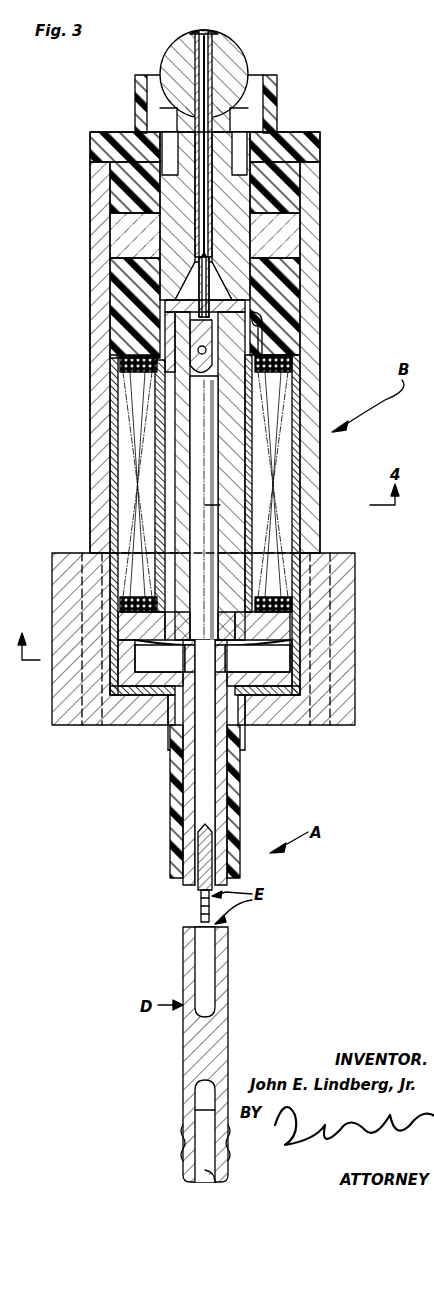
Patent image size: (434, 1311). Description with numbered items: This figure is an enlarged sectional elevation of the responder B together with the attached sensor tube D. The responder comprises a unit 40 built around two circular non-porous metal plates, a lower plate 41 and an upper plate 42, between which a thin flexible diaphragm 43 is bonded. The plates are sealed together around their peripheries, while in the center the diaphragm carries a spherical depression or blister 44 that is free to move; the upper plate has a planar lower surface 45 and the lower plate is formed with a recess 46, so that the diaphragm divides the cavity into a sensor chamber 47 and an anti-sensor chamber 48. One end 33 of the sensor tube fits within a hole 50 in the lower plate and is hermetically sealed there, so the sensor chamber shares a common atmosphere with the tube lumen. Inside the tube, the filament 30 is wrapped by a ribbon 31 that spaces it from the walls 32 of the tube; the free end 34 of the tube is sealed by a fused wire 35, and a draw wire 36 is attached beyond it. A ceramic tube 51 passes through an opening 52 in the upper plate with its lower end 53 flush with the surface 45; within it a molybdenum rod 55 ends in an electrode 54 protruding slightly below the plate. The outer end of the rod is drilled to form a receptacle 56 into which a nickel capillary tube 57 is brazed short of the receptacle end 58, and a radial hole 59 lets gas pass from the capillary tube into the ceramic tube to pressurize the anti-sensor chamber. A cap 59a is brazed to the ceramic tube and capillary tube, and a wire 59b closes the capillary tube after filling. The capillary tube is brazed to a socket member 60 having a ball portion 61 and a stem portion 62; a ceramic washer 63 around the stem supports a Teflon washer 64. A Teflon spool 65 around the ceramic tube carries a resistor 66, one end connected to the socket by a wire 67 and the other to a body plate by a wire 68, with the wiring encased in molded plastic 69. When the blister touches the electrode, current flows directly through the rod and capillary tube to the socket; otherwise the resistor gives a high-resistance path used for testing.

The filament 30 is at (200, 912).
The ribbon 31 is at (205, 858).
The walls of the tube 32 is at (195, 804).
The end of the tube 33 is at (180, 722).
The free end of the tube 34 is at (222, 1162).
The wire 35 is at (212, 1040).
The draw wire 36 is at (200, 1163).
The unit 40 is at (134, 703).
The lower plate 41 is at (130, 700).
The upper plate 42 is at (292, 614).
The diaphragm 43 is at (290, 628).
The blister 44 is at (160, 658).
The planar lower surface 45 is at (130, 672).
The recess 46 is at (250, 660).
The sensor chamber 47 is at (258, 700).
The anti-sensor chamber 48 is at (290, 641).
The hole 50 is at (216, 688).
The ceramic tube 51 is at (232, 480).
The opening 52 is at (118, 612).
The lower end of the tube 53 is at (195, 668).
The electrode 54 is at (226, 676).
The rod 55 is at (213, 463).
The receptacle 56 is at (122, 358).
The capillary tube 57 is at (170, 332).
The lower end of the receptacle 58 is at (157, 418).
The radial hole 59 is at (197, 372).
The cap 59a is at (230, 305).
The wire 59b is at (204, 66).
The socket member 60 is at (240, 124).
The ball portion 61 is at (216, 33).
The stem portion 62 is at (187, 126).
The ceramic washer 63 is at (117, 235).
The Teflon washer 64 is at (135, 86).
The Teflon spool 65 is at (160, 492).
The resistor 66 is at (205, 484).
The wire 67 is at (262, 330).
The wire 68 is at (300, 667).
The plastic 69 is at (336, 326).